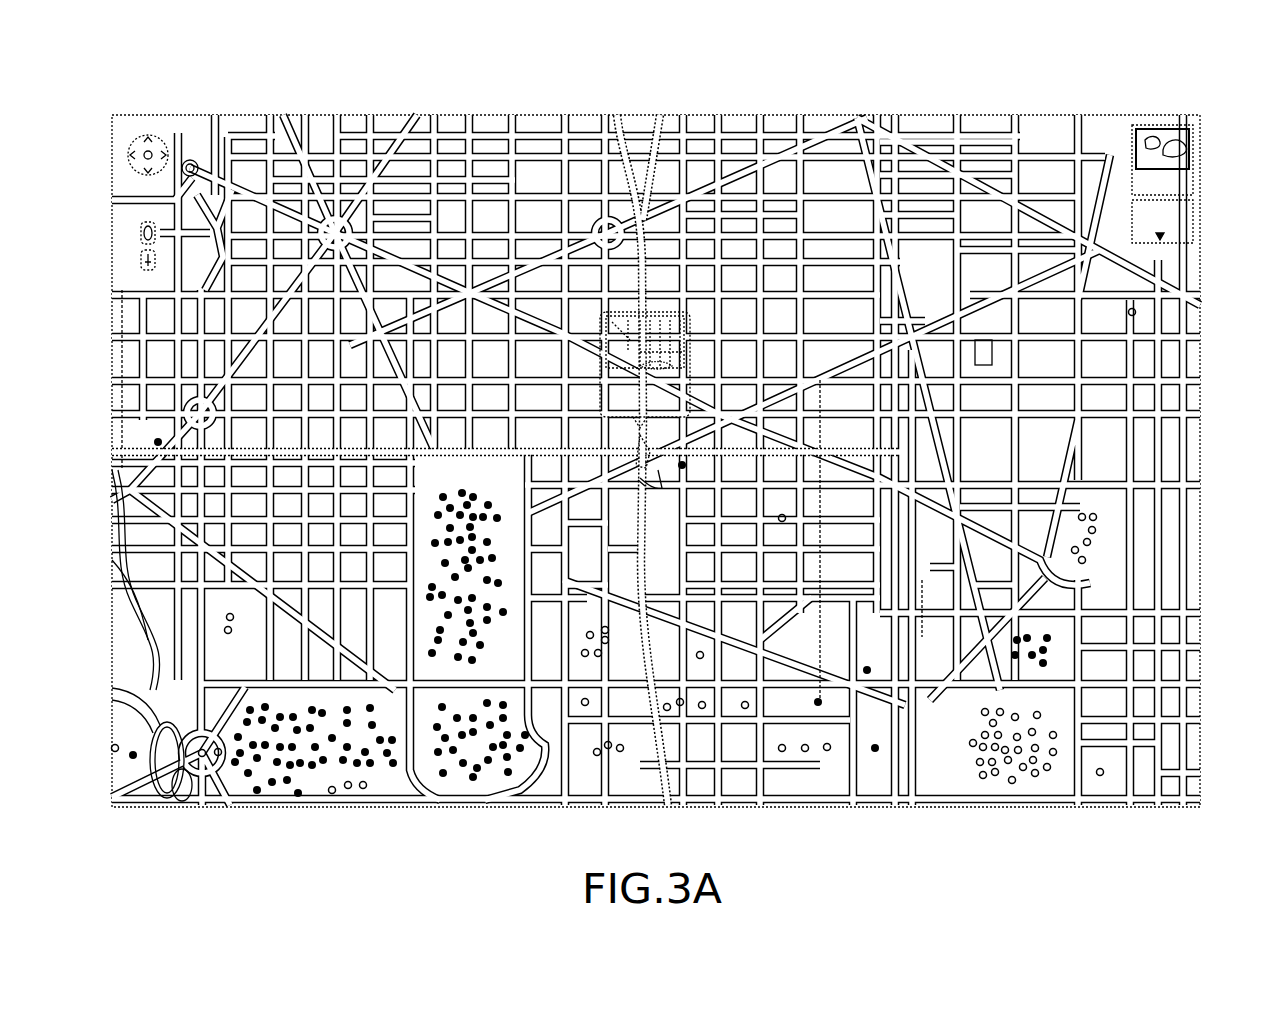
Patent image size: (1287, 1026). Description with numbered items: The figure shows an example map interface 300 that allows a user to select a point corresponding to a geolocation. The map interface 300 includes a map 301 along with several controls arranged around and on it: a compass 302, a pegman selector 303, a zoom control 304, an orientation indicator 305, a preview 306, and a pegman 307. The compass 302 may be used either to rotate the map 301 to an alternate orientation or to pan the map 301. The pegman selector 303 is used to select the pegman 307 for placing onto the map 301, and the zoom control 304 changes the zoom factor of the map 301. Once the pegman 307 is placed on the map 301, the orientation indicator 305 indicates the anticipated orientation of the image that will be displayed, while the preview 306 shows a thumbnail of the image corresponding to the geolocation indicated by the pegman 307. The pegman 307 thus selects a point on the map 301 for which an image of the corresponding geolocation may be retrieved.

The map interface 300 is at (1283, 79).
The map 301 is at (1025, 115).
The compass 302 is at (138, 135).
The pegman selector 303 is at (140, 232).
The zoom control 304 is at (140, 262).
The orientation indicator 305 is at (668, 805).
The preview 306 is at (617, 115).
The pegman 307 is at (112, 452).